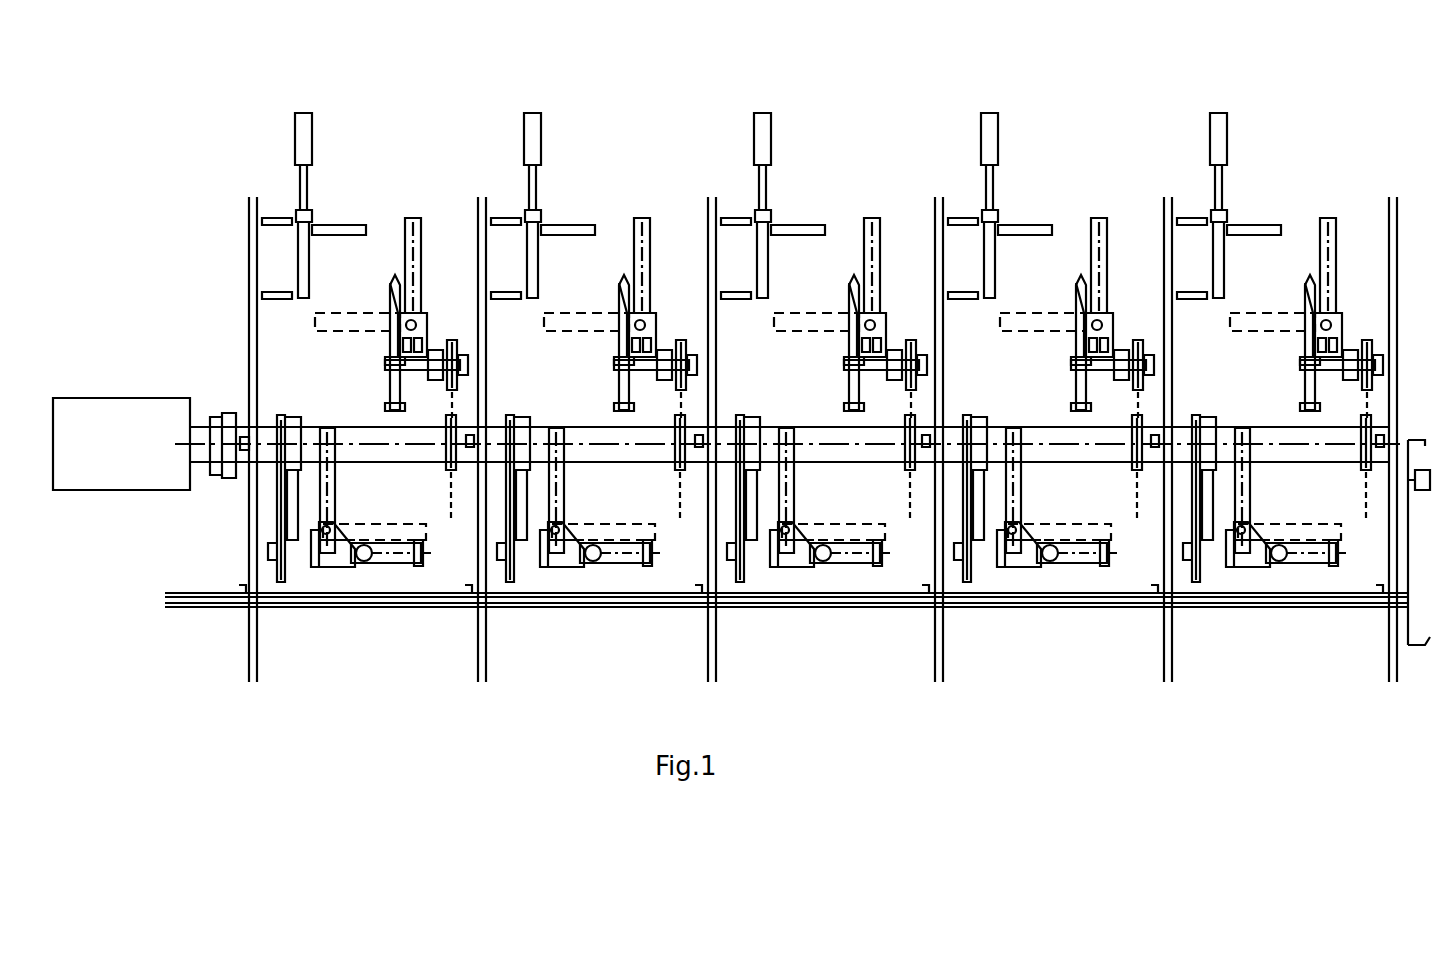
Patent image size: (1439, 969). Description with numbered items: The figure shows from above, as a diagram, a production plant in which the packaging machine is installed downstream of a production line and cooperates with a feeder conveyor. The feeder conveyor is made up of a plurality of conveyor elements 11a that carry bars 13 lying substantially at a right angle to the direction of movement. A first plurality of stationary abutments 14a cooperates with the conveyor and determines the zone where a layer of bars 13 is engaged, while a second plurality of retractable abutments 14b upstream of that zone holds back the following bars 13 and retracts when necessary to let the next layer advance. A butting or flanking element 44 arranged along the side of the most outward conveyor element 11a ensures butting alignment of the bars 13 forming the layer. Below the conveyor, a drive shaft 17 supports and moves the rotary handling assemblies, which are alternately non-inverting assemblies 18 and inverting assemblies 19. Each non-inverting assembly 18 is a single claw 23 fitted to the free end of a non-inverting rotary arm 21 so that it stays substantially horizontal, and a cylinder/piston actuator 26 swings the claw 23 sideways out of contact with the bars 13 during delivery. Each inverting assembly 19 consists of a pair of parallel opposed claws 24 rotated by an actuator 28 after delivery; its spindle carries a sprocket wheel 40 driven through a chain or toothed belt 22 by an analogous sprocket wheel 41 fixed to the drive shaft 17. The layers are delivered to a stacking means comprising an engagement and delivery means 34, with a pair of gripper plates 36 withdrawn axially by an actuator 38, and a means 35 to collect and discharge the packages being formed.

The conveyor element 11a is at (478, 655).
The bar 13 is at (285, 600).
The stationary abutment 14a is at (470, 448).
The retractable abutment 14b is at (700, 592).
The drive shaft 17 is at (355, 437).
The non-inverting rotary handling assembly 18 is at (330, 575).
The inverting rotary handling assembly 19 is at (422, 300).
The non-inverting rotary arm 21 is at (280, 495).
The chain or toothed belt 22 is at (912, 420).
The claw 23 is at (322, 535).
The claw 24 is at (410, 218).
The cylinder/piston actuator 26 is at (400, 560).
The actuator 28 is at (618, 385).
The engagement and delivery means 34 is at (331, 181).
The collection and discharge means 35 is at (282, 192).
The gripper plate 36 is at (540, 272).
The actuator 38 is at (537, 188).
The sprocket wheel 40 is at (680, 345).
The sprocket wheel 41 is at (689, 472).
The butting or flanking element 44 is at (1418, 665).